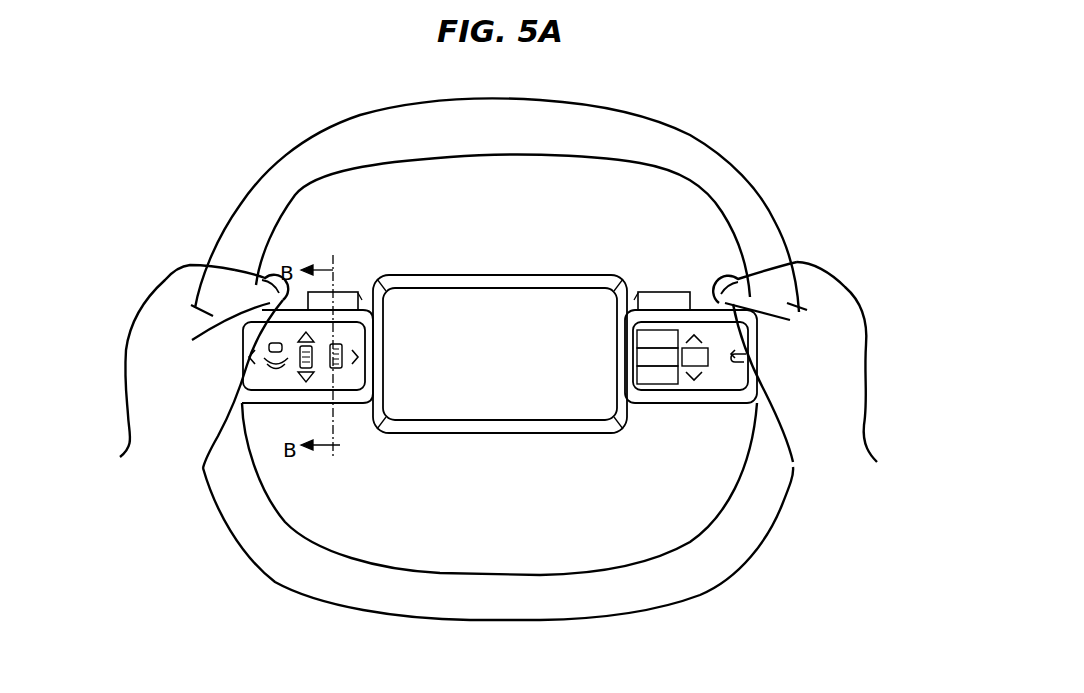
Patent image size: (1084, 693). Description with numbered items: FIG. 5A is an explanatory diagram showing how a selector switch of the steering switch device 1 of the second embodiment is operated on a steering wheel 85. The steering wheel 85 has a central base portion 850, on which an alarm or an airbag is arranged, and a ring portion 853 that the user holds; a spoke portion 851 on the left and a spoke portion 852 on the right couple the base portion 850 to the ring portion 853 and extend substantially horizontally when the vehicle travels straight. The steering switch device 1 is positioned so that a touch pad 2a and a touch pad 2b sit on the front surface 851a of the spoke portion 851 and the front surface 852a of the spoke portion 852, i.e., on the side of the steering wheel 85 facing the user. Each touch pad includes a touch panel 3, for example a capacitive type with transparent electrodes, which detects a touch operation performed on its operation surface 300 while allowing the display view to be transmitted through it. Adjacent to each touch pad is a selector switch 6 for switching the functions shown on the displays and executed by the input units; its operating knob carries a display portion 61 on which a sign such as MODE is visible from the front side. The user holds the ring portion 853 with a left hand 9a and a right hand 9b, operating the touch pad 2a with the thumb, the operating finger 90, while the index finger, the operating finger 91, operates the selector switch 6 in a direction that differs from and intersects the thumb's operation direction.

The steering wheel 85 is at (510, 346).
The ring portion 853 is at (727, 180).
The base portion 850 is at (522, 295).
The spoke portion 851 is at (292, 408).
The front surface 851a is at (283, 402).
The spoke portion 852 is at (672, 310).
The front surface 852a is at (668, 393).
The steering switch device 1 is at (468, 418).
The touch pad 2a is at (450, 454).
The touch pad 2b is at (637, 383).
The touch panel 3 is at (450, 438).
The operation surface 300 is at (702, 383).
The selector switch 6 is at (357, 292).
The display portion 61 is at (360, 295).
The left hand 9a is at (188, 345).
The right hand 9b is at (857, 325).
The operating finger 90 is at (205, 266).
The operating finger 91 is at (257, 287).